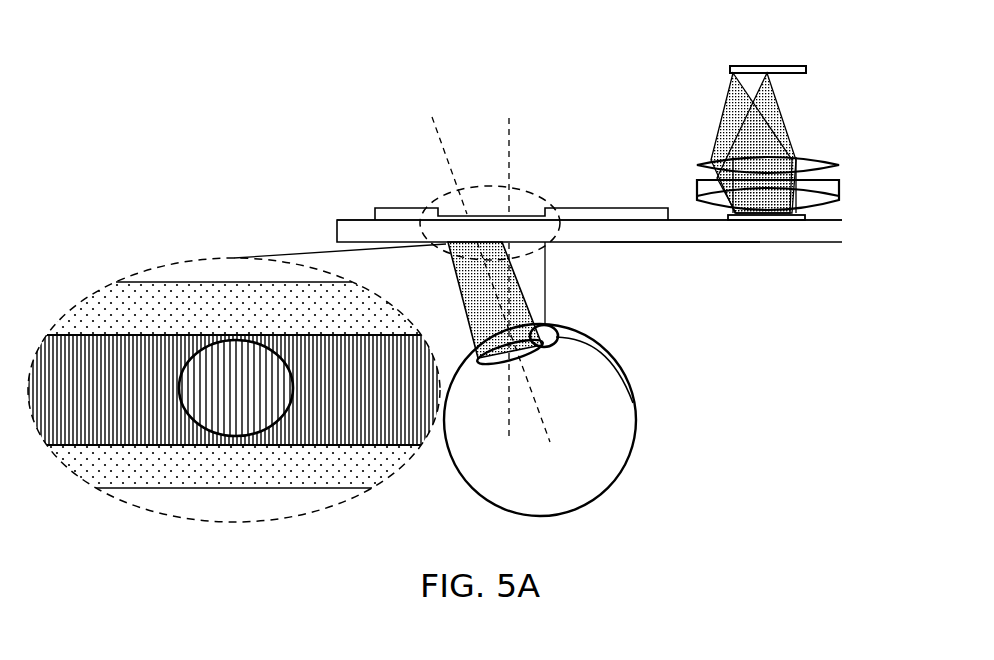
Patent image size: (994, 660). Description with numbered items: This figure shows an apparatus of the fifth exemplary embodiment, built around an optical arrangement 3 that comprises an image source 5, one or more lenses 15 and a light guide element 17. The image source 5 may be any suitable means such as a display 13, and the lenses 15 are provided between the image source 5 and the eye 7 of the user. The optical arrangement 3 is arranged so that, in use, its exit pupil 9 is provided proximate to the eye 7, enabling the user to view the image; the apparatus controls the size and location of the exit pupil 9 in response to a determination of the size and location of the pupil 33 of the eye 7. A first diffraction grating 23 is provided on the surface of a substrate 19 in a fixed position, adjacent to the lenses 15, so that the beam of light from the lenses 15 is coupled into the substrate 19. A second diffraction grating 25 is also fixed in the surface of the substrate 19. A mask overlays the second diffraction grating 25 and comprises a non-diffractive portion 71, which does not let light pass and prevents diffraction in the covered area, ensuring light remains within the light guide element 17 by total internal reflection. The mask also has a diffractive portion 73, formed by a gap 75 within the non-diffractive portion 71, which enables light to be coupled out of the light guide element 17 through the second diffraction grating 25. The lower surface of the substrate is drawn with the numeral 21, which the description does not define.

The optical arrangement 3 is at (811, 158).
The image source 5 is at (810, 70).
The eye 7 is at (632, 447).
The exit pupil 9 is at (546, 325).
The display 13 is at (768, 67).
The lenses 15 is at (842, 162).
The light guide element 17 is at (833, 232).
The substrate 19 is at (103, 290).
The lower surface of substrate 21 is at (678, 243).
The first diffraction grating 23 is at (773, 225).
The second diffraction grating 25 is at (315, 445).
The pupil 33 is at (633, 400).
The non-diffractive portion 71 is at (200, 315).
The diffractive portion 73 is at (234, 436).
The gap 75 is at (235, 333).